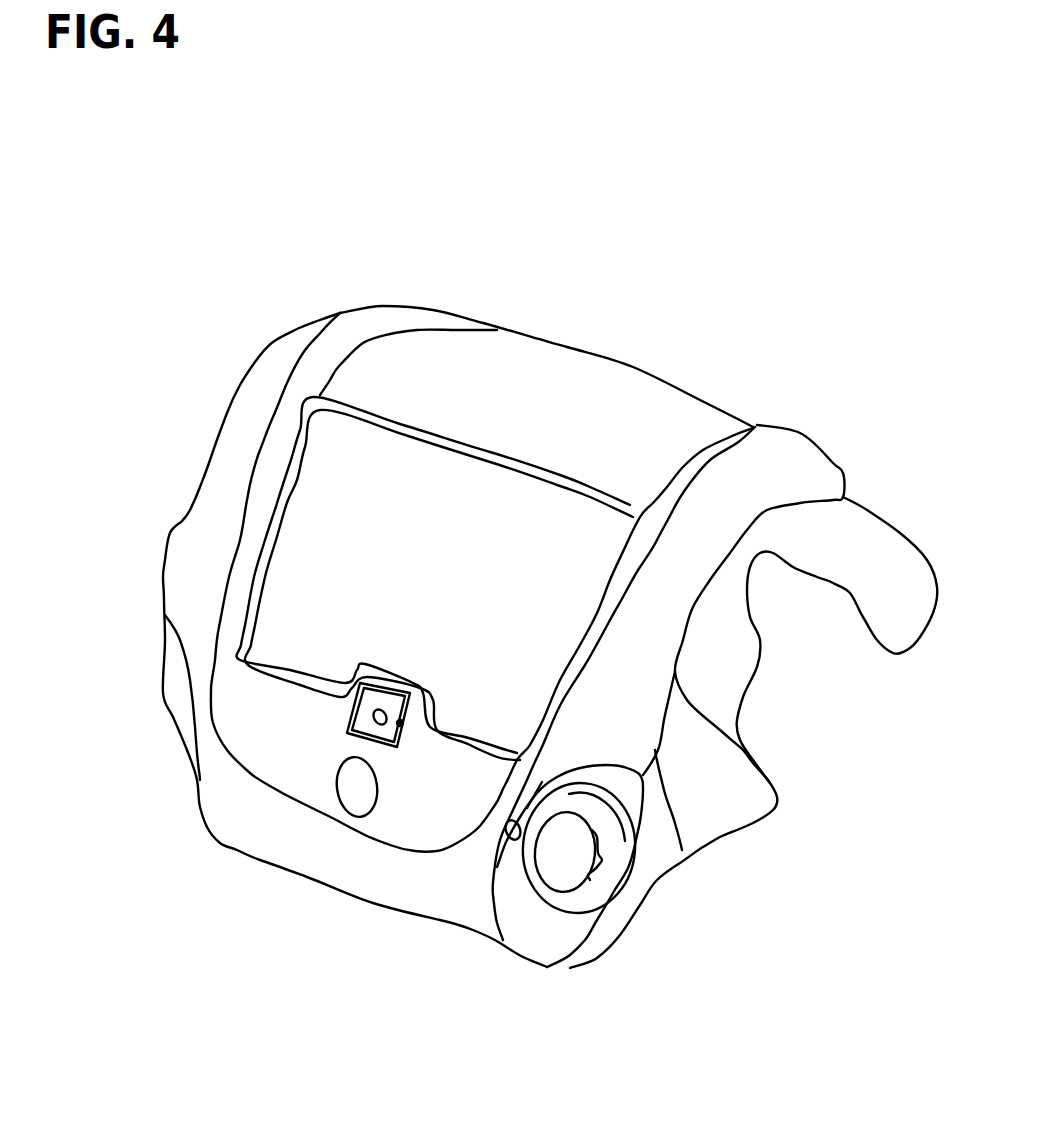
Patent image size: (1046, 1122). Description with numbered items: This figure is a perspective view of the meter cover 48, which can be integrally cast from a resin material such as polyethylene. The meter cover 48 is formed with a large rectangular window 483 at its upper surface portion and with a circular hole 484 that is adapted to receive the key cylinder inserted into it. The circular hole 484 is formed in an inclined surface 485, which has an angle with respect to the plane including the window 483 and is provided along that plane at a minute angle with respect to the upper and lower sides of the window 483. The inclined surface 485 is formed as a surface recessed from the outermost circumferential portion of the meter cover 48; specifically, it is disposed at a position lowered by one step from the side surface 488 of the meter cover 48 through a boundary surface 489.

The meter cover 48 is at (657, 358).
The window 483 is at (317, 517).
The circular hole 484 is at (562, 860).
The inclined surface 485 is at (538, 887).
The side surface 488 is at (740, 780).
The boundary surface 489 is at (623, 800).